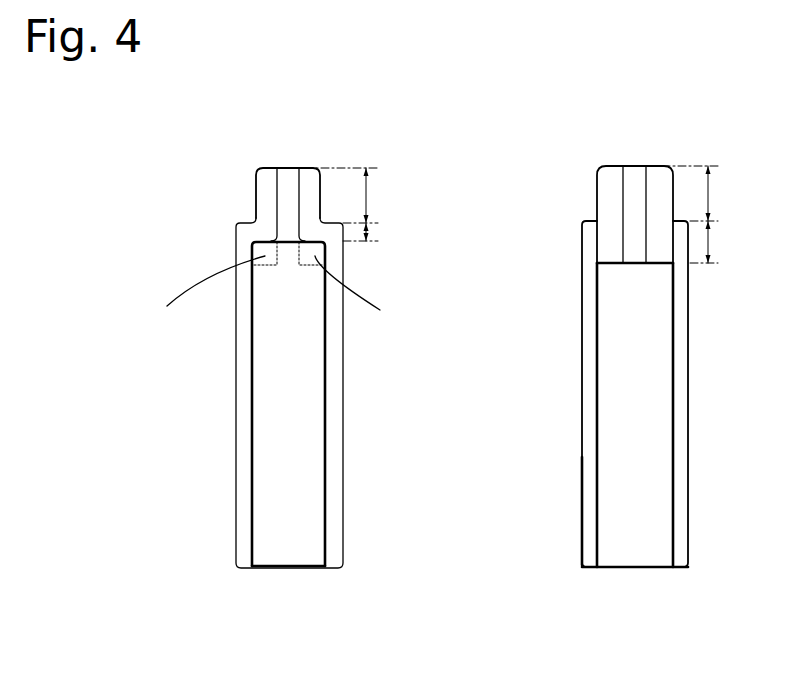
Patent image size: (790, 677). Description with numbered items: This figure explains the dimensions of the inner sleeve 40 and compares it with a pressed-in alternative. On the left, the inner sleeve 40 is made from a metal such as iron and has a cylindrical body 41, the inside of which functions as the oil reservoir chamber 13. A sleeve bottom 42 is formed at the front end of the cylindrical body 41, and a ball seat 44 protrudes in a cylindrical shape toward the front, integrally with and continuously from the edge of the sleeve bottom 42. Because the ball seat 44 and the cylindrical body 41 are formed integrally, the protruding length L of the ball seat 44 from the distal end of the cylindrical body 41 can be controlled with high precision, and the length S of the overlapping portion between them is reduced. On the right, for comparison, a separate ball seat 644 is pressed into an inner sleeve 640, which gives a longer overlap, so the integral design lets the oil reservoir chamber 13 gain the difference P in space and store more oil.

The inner sleeve 40 is at (192, 163).
The cylindrical body 41 is at (243, 406).
The sleeve bottom 42 is at (256, 232).
The ball seat 44 is at (310, 192).
The oil reservoir chamber 13 is at (298, 398).
The inner sleeve 640 is at (588, 410).
The ball seat 644 is at (660, 190).